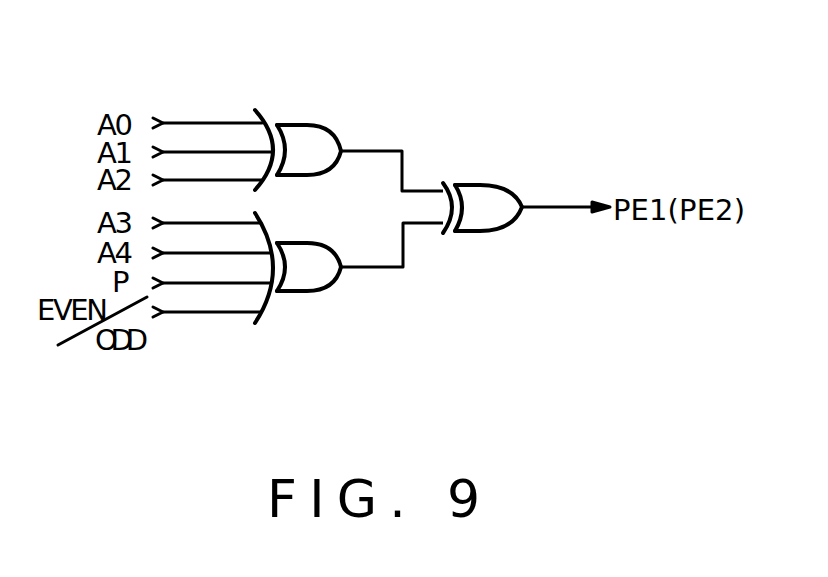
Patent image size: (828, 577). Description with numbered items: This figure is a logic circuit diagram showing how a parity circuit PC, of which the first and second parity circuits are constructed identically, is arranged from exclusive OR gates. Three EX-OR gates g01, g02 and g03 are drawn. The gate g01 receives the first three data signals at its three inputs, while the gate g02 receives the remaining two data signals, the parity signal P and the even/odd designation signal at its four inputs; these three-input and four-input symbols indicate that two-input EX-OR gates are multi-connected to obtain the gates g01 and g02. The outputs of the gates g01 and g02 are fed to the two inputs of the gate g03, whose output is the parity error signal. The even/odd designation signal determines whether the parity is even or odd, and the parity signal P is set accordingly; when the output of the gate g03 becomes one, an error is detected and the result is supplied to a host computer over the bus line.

The exclusive OR gate g01 is at (330, 127).
The exclusive OR gate g02 is at (330, 246).
The exclusive OR gate g03 is at (503, 188).
The parity circuit PC is at (470, 138).